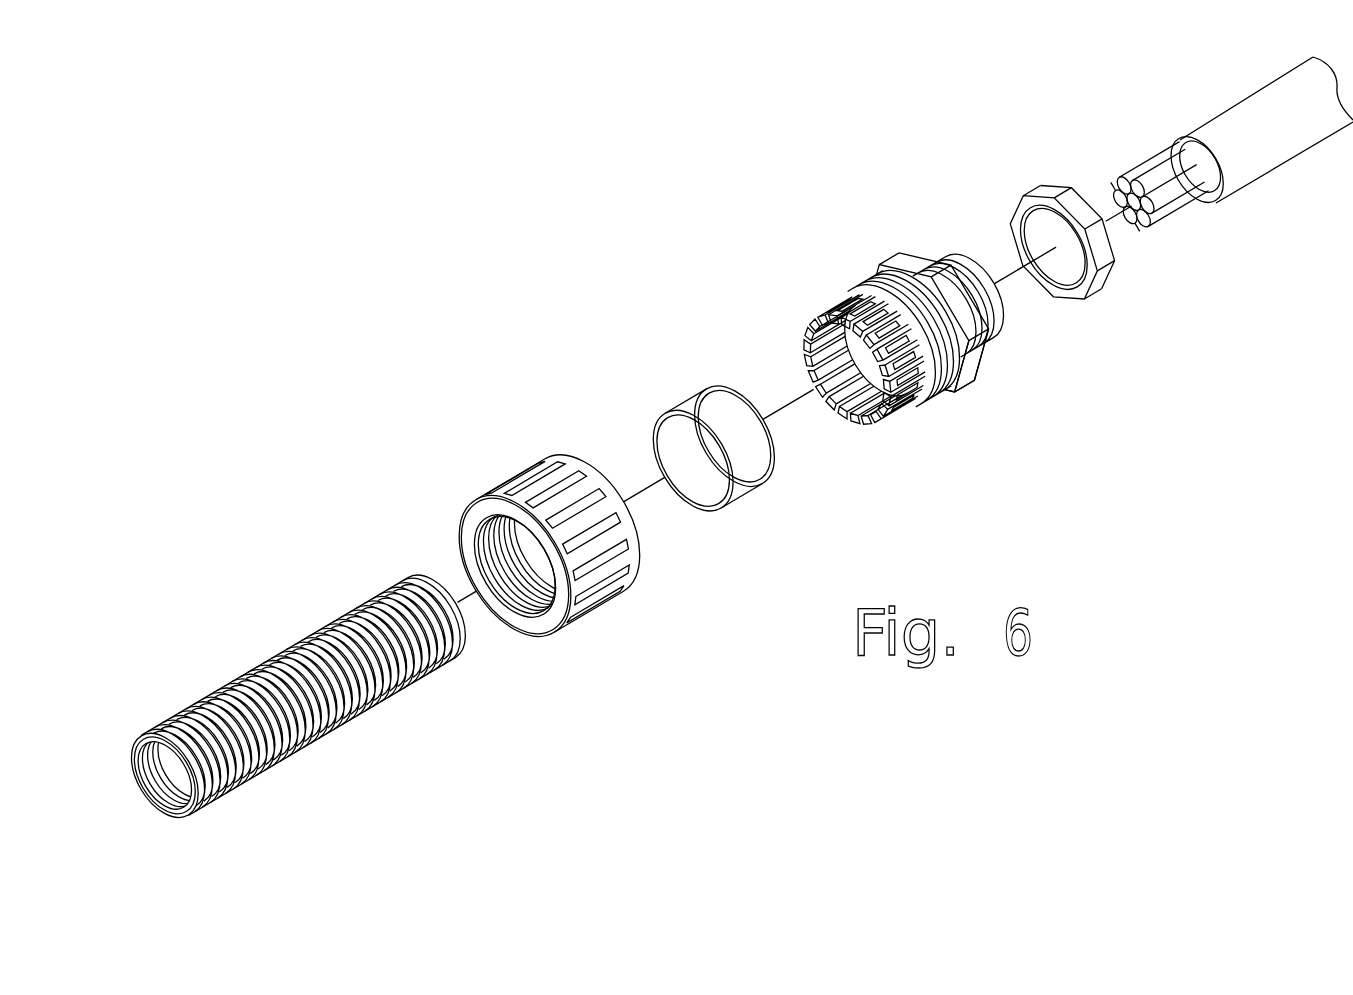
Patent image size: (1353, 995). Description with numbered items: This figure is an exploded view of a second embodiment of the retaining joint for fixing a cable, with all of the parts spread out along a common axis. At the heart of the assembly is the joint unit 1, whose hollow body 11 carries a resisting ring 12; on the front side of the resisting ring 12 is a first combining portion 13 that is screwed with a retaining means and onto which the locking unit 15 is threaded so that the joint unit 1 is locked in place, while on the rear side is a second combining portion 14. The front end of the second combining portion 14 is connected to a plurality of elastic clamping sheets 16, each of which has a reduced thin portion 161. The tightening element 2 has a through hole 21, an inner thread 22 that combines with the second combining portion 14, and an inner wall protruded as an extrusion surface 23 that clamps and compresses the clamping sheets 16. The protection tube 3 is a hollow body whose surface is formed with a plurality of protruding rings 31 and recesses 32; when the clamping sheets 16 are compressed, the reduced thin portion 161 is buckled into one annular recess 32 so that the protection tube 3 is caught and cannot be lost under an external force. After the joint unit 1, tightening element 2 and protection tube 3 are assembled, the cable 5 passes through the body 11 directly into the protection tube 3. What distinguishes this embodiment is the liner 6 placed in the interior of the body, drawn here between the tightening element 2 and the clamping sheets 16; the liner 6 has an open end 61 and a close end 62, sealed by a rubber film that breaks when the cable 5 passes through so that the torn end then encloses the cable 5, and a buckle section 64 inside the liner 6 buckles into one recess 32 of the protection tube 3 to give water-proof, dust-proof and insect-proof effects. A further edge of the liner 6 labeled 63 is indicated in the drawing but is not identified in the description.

The joint unit 1 is at (820, 247).
The hollow body 11 is at (892, 250).
The resisting ring 12 is at (920, 273).
The first combining portion 13 is at (985, 318).
The second combining portion 14 is at (945, 395).
The locking unit 15 is at (1088, 298).
The elastic clamping sheets 16 is at (838, 316).
The reduced thin portion 161 is at (840, 440).
The tightening element 2 is at (520, 453).
The through hole 21 is at (472, 565).
The thread 22 is at (470, 578).
The extrusion surface 23 is at (500, 600).
The protection tube 3 is at (268, 635).
The protruding rings 31 is at (373, 600).
The recesses 32 is at (378, 600).
The cable 5 is at (1268, 102).
The liner 6 is at (666, 382).
The open end 61 is at (690, 470).
The close end 62 is at (747, 455).
The rear ring of sleeve 63 is at (742, 395).
The buckle section 64 is at (663, 442).